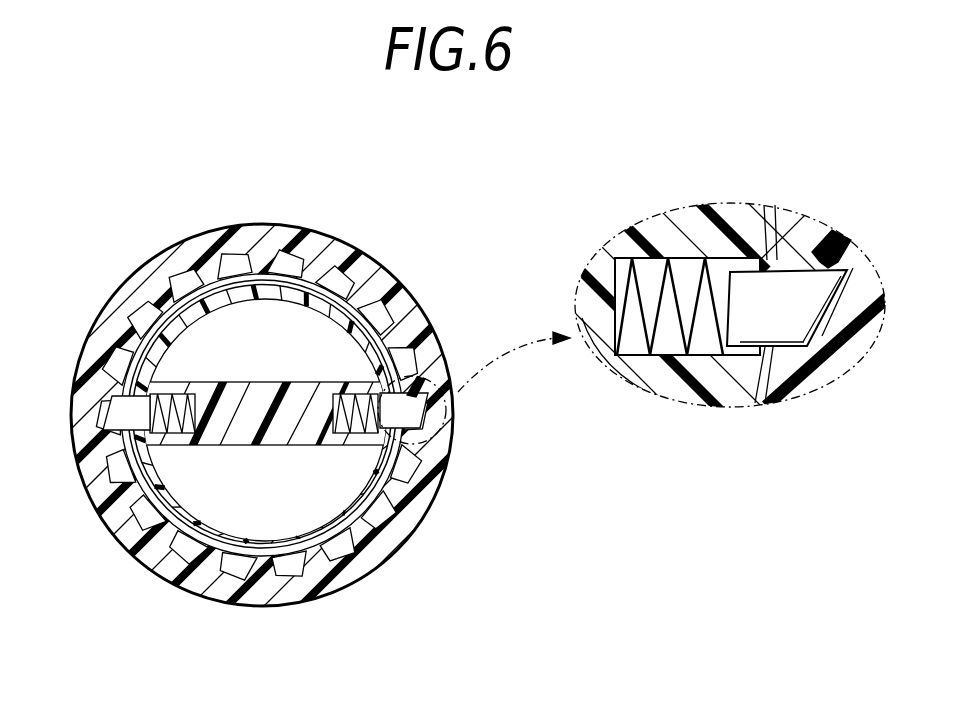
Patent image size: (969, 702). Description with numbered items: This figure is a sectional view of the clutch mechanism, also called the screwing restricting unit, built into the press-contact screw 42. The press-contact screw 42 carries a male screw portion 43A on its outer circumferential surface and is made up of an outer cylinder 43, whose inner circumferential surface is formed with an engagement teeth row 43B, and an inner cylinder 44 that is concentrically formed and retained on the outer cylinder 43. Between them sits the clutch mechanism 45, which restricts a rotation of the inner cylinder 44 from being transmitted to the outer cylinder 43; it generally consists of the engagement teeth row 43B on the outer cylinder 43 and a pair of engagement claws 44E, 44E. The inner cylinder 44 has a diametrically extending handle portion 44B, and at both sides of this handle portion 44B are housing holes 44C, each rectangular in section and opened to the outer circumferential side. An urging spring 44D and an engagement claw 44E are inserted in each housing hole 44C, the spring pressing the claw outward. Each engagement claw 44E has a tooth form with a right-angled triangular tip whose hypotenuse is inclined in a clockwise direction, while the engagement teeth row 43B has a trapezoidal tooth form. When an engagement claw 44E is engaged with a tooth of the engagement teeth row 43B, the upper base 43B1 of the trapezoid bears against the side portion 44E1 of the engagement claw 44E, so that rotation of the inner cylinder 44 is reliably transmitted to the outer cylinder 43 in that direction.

The press-contact screw 42 is at (198, 597).
The outer cylinder 43 is at (380, 544).
The male screw portion 43A is at (138, 552).
The engagement teeth row 43B is at (390, 322).
The upper base 43B1 is at (827, 290).
The inner cylinder 44 is at (340, 573).
The handle portion 44B is at (270, 400).
The housing hole 44C is at (162, 396).
The urging spring 44D is at (128, 438).
The engagement claw 44E is at (112, 412).
The side portion 44E1 is at (760, 397).
The clutch mechanism 45 is at (432, 392).